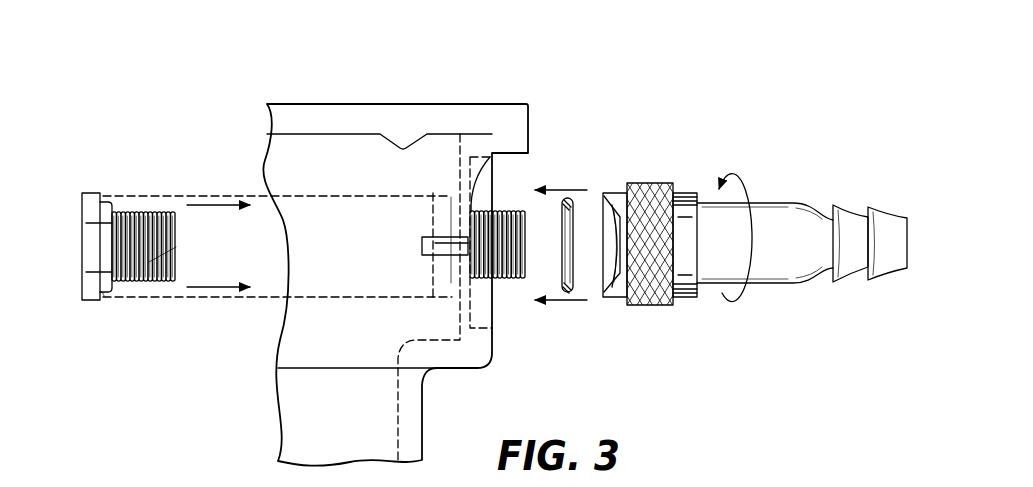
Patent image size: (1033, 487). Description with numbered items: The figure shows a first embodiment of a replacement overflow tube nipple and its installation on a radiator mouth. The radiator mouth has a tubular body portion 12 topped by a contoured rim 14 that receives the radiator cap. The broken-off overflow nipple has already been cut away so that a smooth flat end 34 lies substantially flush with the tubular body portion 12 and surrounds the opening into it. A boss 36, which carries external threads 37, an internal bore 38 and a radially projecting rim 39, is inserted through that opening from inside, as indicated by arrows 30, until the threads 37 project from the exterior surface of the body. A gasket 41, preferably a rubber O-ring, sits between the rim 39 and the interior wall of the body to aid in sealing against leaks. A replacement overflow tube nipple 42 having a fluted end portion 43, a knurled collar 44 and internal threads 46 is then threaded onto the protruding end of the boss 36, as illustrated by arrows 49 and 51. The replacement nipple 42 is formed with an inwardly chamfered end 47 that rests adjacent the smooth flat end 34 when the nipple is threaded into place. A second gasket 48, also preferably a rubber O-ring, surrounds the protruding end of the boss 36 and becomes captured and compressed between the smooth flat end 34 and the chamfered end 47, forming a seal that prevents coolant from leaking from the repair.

The tubular body portion 12 is at (438, 173).
The contoured rim 14 is at (377, 120).
The arrows 30 is at (208, 205).
The smooth flat end 34 is at (492, 177).
The boss 36 is at (70, 184).
The external threads 37 is at (143, 213).
The internal bore 38 is at (176, 247).
The radially projecting rim 39 is at (447, 213).
The gasket 41 is at (108, 287).
The replacement overflow tube nipple 42 is at (815, 133).
The fluted end portion 43 is at (855, 297).
The knurled collar 44 is at (652, 198).
The internal threads 46 is at (617, 243).
The inwardly chamfered end 47 is at (604, 227).
The gasket 48 is at (567, 235).
The arrows 49 is at (578, 190).
The arrow 51 is at (742, 293).